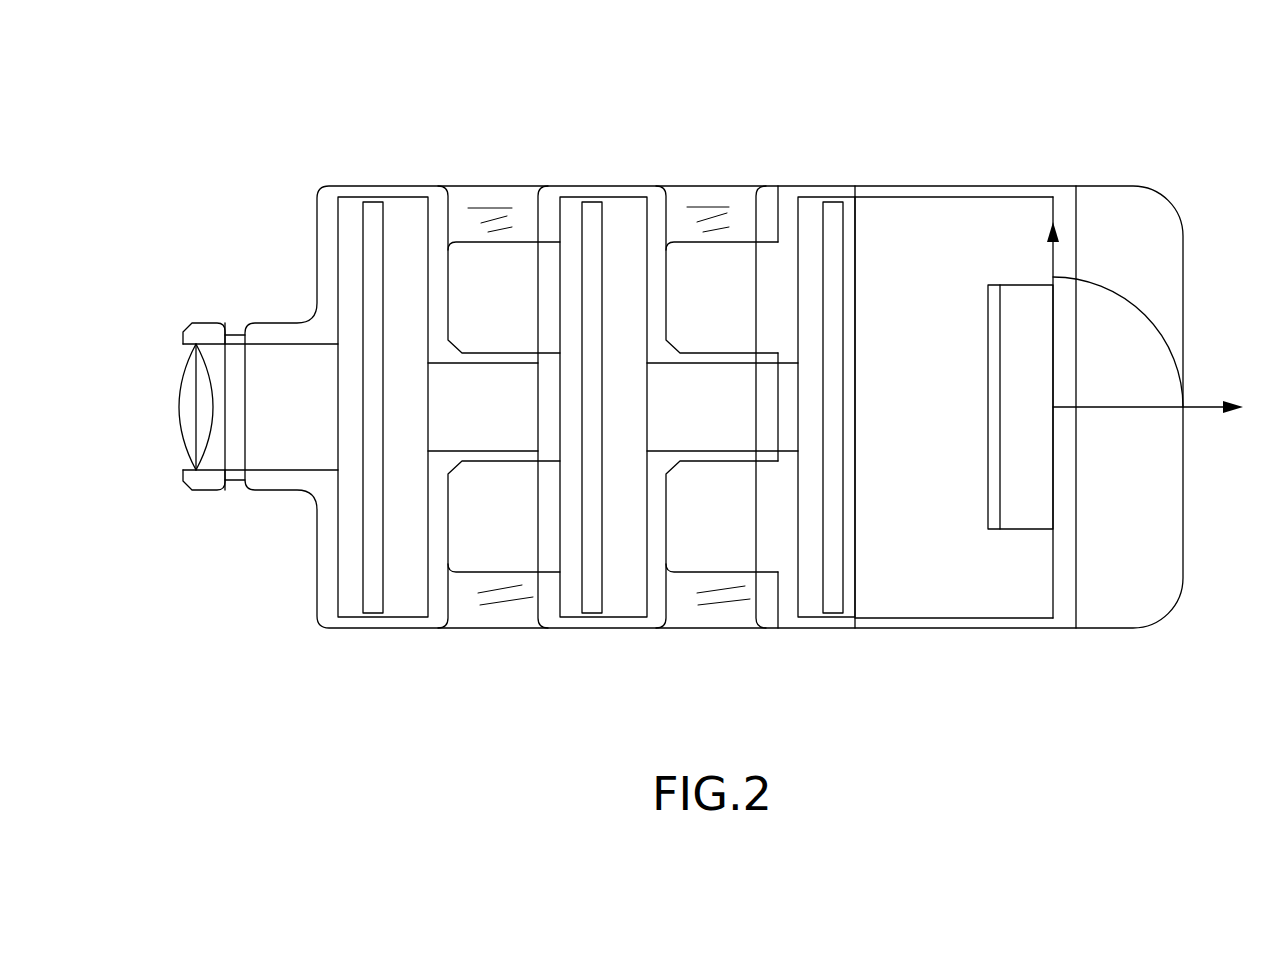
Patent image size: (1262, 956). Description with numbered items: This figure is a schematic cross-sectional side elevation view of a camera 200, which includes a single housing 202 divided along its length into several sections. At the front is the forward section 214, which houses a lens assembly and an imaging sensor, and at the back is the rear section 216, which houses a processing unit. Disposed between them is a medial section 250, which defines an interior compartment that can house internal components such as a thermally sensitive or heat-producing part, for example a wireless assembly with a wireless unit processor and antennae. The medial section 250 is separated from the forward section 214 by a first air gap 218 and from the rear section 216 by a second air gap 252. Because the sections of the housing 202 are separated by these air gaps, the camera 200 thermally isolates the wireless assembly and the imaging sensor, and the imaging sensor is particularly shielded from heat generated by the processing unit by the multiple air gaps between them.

The camera 200 is at (225, 135).
The housing 202 is at (990, 685).
The forward section 214 is at (388, 185).
The medial section 250 is at (615, 185).
The rear section 216 is at (972, 185).
The first air gap 218 is at (513, 530).
The second air gap 252 is at (728, 546).